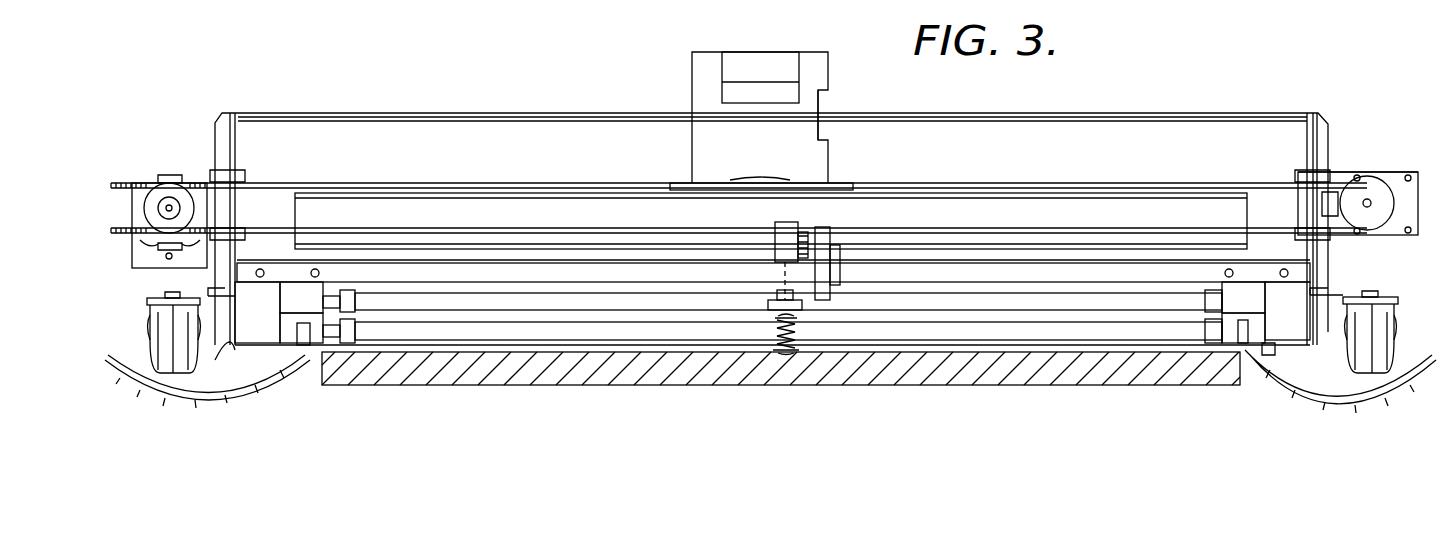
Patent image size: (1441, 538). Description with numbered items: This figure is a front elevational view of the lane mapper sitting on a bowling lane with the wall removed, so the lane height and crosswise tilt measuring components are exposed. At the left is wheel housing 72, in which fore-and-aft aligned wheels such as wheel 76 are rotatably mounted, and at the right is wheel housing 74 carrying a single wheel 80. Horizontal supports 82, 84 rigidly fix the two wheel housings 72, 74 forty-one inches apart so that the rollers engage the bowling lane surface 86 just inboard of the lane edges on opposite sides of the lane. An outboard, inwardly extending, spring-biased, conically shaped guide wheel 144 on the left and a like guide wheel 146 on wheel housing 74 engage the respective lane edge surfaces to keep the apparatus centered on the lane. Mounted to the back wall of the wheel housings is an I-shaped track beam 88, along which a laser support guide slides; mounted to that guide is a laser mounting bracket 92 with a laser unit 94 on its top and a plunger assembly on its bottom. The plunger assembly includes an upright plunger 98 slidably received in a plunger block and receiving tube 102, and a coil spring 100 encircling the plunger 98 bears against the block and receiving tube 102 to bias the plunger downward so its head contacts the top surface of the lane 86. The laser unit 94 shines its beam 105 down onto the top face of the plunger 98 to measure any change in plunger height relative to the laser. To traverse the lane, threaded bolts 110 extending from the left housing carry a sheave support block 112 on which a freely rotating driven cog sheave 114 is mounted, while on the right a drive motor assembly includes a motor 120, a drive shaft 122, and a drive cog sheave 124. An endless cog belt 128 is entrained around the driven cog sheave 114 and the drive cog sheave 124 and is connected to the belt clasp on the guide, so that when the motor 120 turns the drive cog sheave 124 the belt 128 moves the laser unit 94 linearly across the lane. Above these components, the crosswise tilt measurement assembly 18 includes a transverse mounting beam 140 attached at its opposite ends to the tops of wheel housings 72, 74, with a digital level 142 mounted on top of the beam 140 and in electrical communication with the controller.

The crosswise tilt measurement assembly 18 is at (690, 90).
The digital level 142 is at (822, 72).
The endless cog belt 128 is at (1118, 184).
The transverse mounting beam 140 is at (517, 216).
The threaded bolts 110 is at (111, 188).
The sheave support block 112 is at (170, 180).
The driven cog sheave 114 is at (152, 195).
The motor 120 is at (1338, 176).
The drive cog sheave 124 is at (1382, 194).
The drive shaft 122 is at (1368, 207).
The I-shaped track beam 88 is at (1296, 270).
The wheel housing 72 is at (318, 350).
The wheel 76 is at (303, 352).
The wheel housing 74 is at (1229, 352).
The wheel 80 is at (1243, 350).
The horizontal support 84 is at (397, 300).
The laser unit 94 is at (785, 232).
The laser mounting bracket 92 is at (812, 247).
The beam 105 is at (770, 276).
The plunger block and receiving tube 102 is at (770, 312).
The coil spring 100 is at (782, 334).
The plunger 98 is at (790, 352).
The horizontal support 82 is at (540, 356).
The bowling lane surface 86 is at (992, 386).
The guide wheel 144 is at (270, 352).
The guide wheel 146 is at (1270, 352).